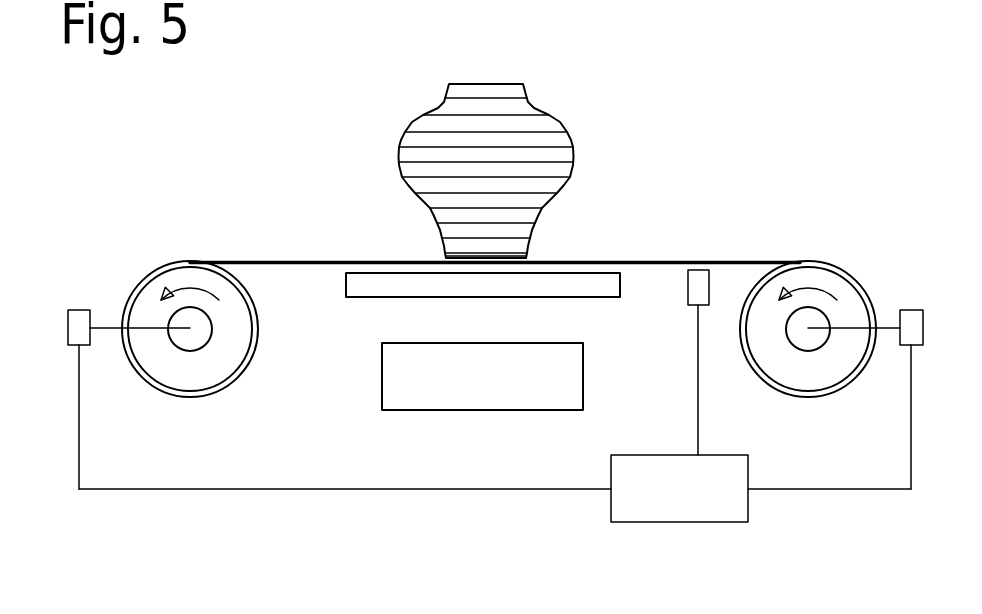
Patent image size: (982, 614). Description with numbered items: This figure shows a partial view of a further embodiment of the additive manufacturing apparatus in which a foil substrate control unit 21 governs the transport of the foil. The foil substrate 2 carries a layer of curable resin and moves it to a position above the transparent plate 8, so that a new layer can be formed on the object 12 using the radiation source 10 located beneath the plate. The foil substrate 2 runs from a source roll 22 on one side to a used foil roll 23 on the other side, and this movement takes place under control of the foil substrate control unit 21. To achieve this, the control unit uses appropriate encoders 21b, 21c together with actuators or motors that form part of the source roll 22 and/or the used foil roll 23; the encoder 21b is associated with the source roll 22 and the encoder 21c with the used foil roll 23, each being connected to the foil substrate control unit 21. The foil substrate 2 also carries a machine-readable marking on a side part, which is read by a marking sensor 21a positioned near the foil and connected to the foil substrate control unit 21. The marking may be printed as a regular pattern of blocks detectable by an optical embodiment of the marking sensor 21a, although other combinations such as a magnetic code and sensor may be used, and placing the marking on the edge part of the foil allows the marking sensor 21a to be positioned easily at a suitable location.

The object 12 is at (549, 123).
The foil substrate 2 is at (732, 262).
The used foil roll 23 is at (143, 288).
The source roll 22 is at (812, 263).
The encoder 21c is at (82, 320).
The encoder 21b is at (915, 318).
The marking sensor 21a is at (692, 294).
The foil substrate control unit 21 is at (681, 488).
The transparent plate 8 is at (359, 288).
The radiation source 10 is at (397, 380).